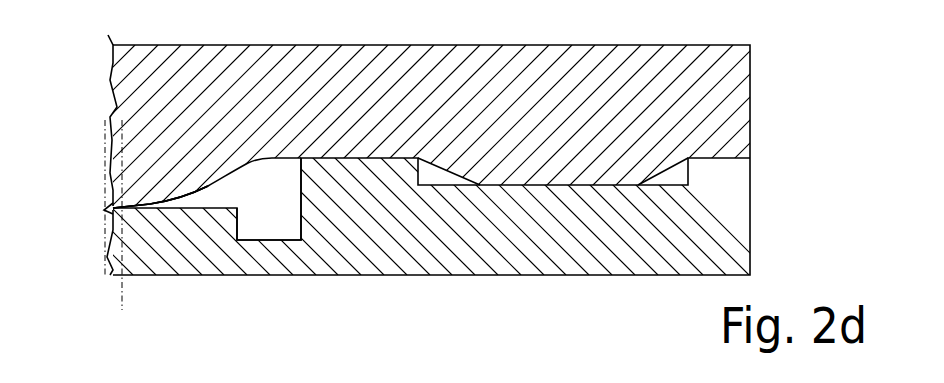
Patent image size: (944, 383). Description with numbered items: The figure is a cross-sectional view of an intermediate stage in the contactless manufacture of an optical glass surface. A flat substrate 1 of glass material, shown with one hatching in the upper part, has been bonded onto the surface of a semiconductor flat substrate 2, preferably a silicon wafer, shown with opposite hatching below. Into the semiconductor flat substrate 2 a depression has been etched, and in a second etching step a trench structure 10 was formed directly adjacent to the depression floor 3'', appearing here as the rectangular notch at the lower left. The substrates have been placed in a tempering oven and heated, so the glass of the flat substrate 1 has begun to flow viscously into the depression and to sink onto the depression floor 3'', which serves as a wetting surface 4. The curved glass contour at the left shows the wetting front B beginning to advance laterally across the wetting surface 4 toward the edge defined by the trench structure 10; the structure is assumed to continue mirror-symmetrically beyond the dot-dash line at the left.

The flat substrate 1 is at (487, 109).
The semiconductor flat substrate 2 is at (490, 232).
The trench structure 10 is at (267, 227).
The depression floor 3'' is at (156, 215).
The wetting surface 4 is at (158, 200).
The wetting front B is at (110, 210).